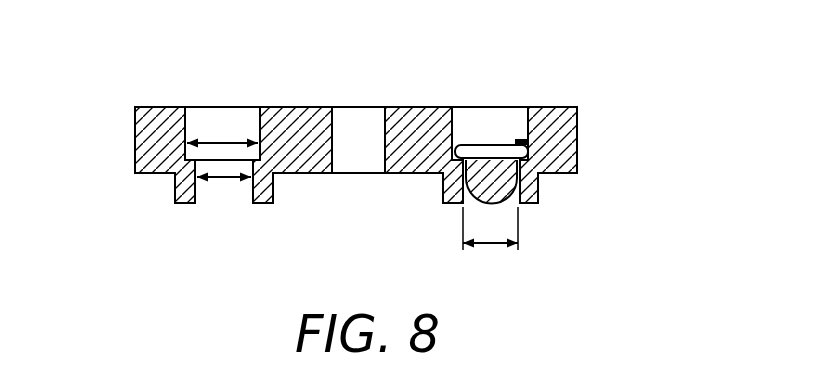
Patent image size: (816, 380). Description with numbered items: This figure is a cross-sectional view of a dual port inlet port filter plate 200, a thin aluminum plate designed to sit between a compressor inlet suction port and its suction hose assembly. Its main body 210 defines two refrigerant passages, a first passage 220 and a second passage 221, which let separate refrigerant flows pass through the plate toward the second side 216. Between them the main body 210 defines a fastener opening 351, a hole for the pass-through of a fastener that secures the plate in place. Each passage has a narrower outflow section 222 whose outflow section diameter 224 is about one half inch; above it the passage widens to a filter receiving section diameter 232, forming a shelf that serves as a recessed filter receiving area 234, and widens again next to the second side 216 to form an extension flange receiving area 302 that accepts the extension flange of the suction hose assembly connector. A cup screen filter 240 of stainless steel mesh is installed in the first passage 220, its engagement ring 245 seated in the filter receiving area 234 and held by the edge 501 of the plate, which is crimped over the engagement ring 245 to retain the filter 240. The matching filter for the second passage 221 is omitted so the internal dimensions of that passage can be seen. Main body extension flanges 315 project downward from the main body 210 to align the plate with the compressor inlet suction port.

The inlet port filter plate 200 is at (346, 250).
The main body 210 is at (578, 133).
The second side 216 is at (145, 105).
The first passage 220 is at (482, 124).
The second passage 221 is at (223, 118).
The outflow section 222 is at (205, 193).
The outflow section diameter 224 is at (223, 180).
The filter receiving section diameter 232 is at (237, 143).
The filter receiving area 234 is at (448, 154).
The filter 240 is at (527, 203).
The engagement ring 245 is at (493, 145).
The extension flange receiving area 302 is at (187, 119).
The main body extension flange 315 is at (169, 186).
The fastener opening 351 is at (357, 120).
The edge 501 is at (517, 140).